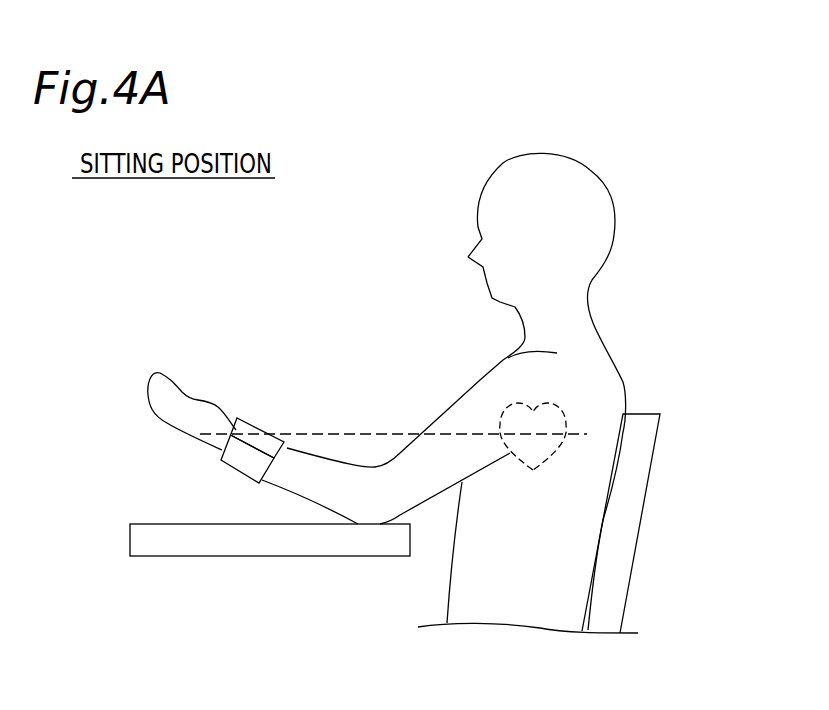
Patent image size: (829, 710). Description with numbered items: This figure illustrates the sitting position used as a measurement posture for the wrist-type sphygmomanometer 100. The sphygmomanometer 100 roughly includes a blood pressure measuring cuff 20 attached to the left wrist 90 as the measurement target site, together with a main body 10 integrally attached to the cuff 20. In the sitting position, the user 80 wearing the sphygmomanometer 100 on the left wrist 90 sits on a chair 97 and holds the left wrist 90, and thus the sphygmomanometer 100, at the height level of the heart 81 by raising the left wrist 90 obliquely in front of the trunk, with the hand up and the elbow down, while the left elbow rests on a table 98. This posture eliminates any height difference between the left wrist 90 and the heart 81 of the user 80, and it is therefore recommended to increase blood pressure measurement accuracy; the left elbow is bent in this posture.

The wrist-type sphygmomanometer 100 is at (258, 405).
The main body 10 is at (251, 424).
The blood pressure measuring cuff 20 is at (244, 466).
The left wrist 90 is at (221, 451).
The user 80 is at (603, 297).
The heart 81 is at (553, 457).
The chair 97 is at (620, 577).
The table 98 is at (145, 524).